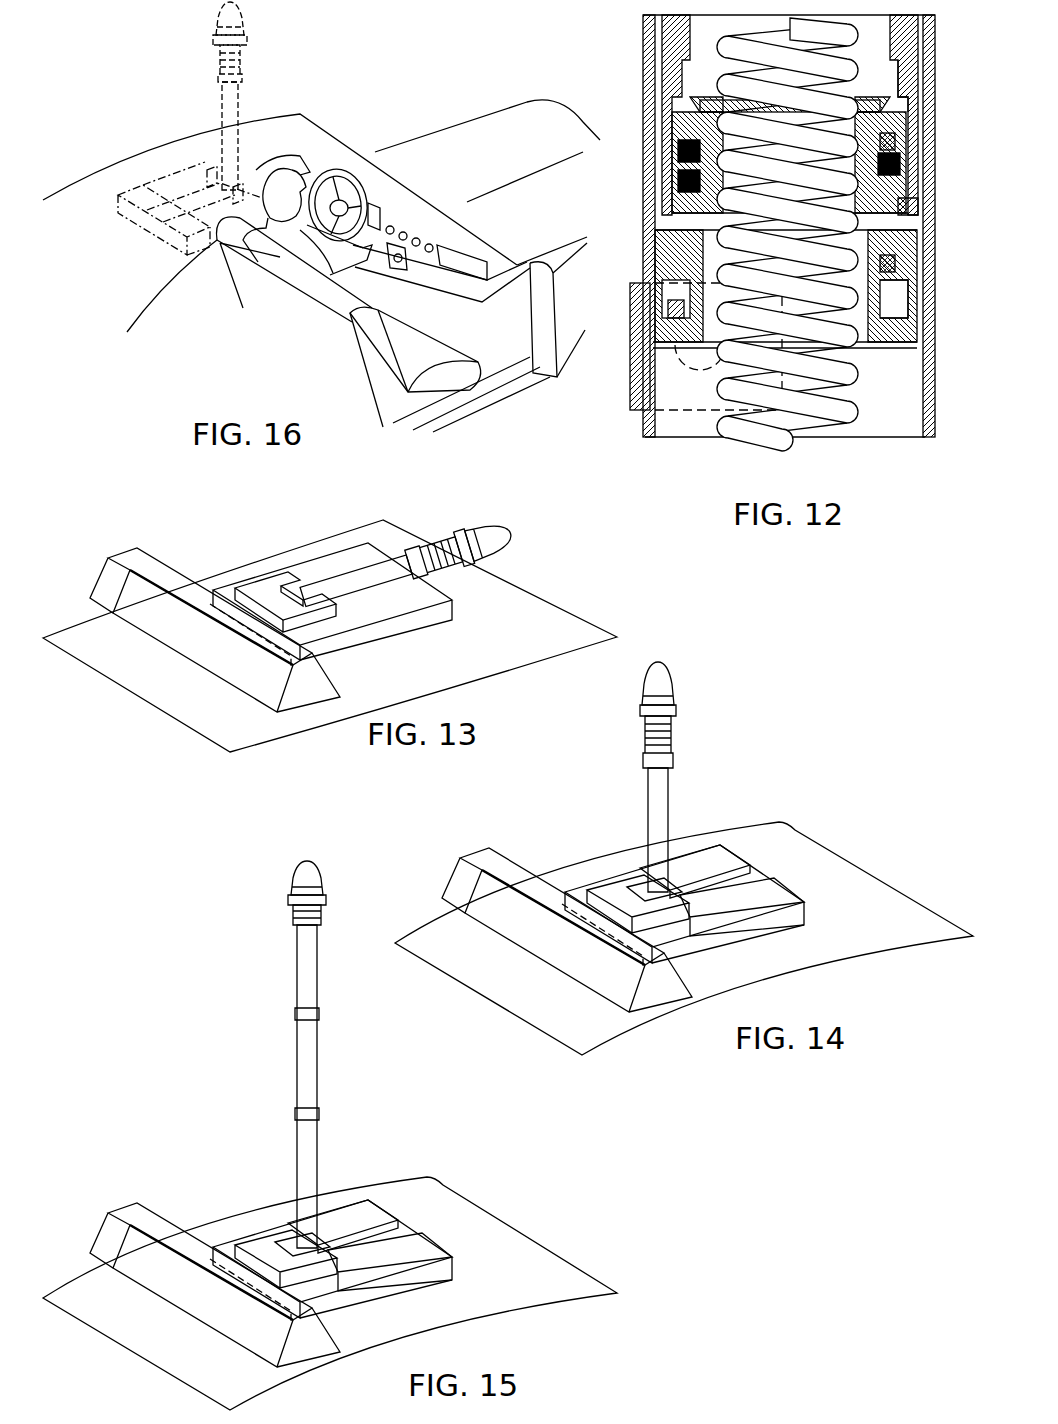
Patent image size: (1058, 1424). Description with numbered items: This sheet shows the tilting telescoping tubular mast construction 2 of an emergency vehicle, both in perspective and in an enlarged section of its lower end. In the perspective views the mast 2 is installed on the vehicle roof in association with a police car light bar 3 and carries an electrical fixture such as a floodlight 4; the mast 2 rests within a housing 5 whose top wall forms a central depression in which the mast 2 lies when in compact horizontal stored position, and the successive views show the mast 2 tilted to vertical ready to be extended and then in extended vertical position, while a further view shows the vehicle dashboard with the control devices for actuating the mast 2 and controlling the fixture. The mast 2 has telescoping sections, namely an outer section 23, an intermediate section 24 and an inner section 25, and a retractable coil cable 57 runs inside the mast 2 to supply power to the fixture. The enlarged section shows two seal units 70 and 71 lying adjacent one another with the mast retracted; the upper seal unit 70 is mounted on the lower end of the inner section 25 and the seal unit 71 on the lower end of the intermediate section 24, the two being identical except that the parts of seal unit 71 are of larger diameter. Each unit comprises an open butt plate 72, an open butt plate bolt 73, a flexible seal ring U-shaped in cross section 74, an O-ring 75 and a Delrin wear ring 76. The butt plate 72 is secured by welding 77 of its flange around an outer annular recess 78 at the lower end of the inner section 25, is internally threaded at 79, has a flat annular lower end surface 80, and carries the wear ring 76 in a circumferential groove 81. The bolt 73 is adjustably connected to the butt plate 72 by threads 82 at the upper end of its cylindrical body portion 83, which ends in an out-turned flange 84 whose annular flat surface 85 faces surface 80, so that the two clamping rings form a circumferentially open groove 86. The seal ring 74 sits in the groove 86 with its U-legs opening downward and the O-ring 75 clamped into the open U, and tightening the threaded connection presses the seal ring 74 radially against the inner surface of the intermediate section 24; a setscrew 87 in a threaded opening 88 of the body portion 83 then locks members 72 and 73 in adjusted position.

In FIG. 16, the tilting telescoping tubular mast construction 2 is at (240, 93).
In FIG. 13, the tilting telescoping tubular mast construction 2 is at (425, 545).
In FIG. 14, the tilting telescoping tubular mast construction 2 is at (645, 814).
In FIG. 15, the tilting telescoping tubular mast construction 2 is at (293, 1172).
In FIG. 16, the light bar 3 is at (183, 127).
In FIG. 13, the light bar 3 is at (150, 548).
In FIG. 14, the light bar 3 is at (500, 849).
In FIG. 15, the light bar 3 is at (123, 1202).
In FIG. 16, the floodlight 4 is at (246, 5).
In FIG. 13, the floodlight 4 is at (500, 535).
In FIG. 14, the floodlight 4 is at (662, 668).
In FIG. 15, the floodlight 4 is at (320, 871).
In FIG. 16, the housing 5 is at (183, 165).
In FIG. 13, the housing 5 is at (318, 560).
In FIG. 14, the housing 5 is at (695, 853).
In FIG. 15, the housing 5 is at (430, 1246).
In FIG. 12, the outer section 23 is at (646, 24).
In FIG. 12, the intermediate section 24 is at (660, 45).
In FIG. 12, the inner section 25 is at (895, 24).
In FIG. 12, the coil cable 57 is at (789, 243).
In FIG. 12, the seal unit 70 is at (778, 194).
In FIG. 12, the seal unit 71 is at (868, 300).
In FIG. 12, the open butt plate 72 is at (886, 141).
In FIG. 12, the open butt plate bolt 73 is at (735, 237).
In FIG. 12, the flexible seal ring U-shaped in cross section 74 is at (898, 160).
In FIG. 12, the O-ring 75 is at (684, 185).
In FIG. 12, the Delrin wear ring 76 is at (674, 124).
In FIG. 12, the welding 77 is at (906, 88).
In FIG. 12, the outer annular recess 78 is at (918, 80).
In FIG. 12, the internal threads 79 is at (860, 98).
In FIG. 12, the flat annular lower end surface 80 is at (787, 134).
In FIG. 12, the circumferential groove 81 is at (702, 99).
In FIG. 12, the threads 82 is at (852, 120).
In FIG. 12, the cylindrical body portion 83 is at (840, 198).
In FIG. 12, the out-turned flange 84 is at (905, 206).
In FIG. 12, the annular flat surface 85 is at (686, 213).
In FIG. 12, the circumferentially open groove 86 is at (688, 166).
In FIG. 12, the setscrew 87 is at (846, 144).
In FIG. 12, the threaded opening 88 is at (880, 296).